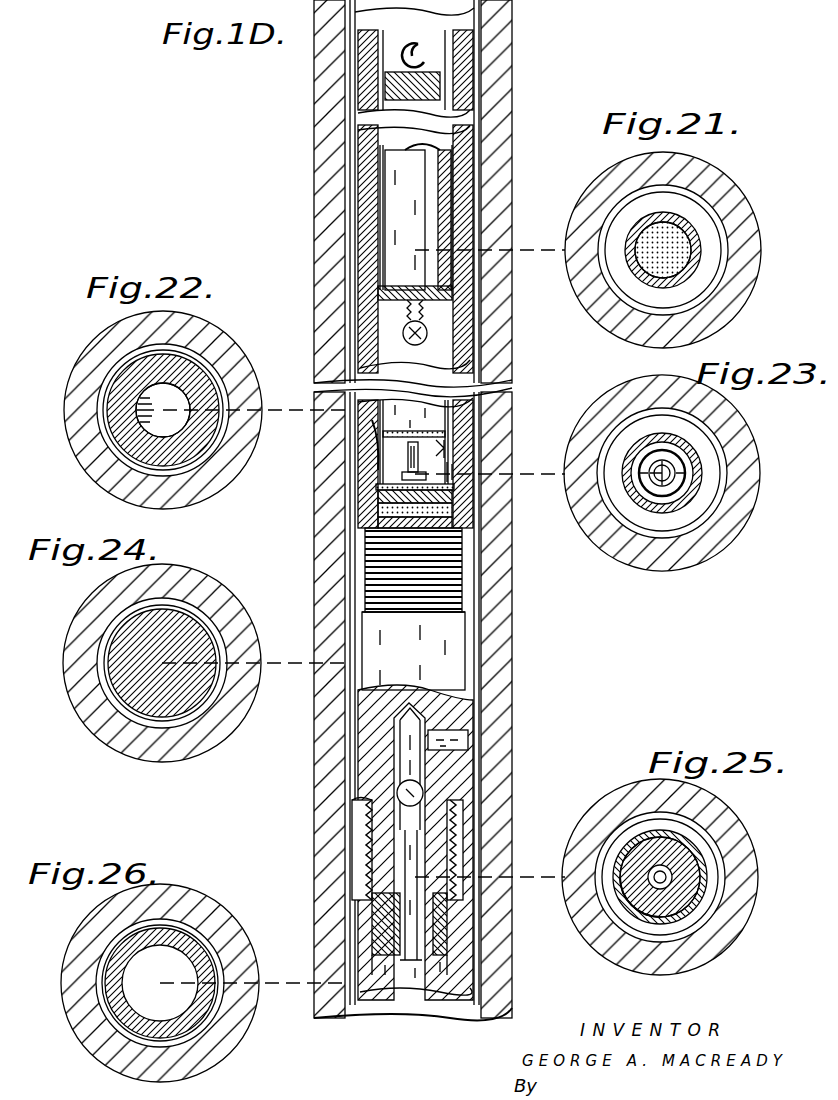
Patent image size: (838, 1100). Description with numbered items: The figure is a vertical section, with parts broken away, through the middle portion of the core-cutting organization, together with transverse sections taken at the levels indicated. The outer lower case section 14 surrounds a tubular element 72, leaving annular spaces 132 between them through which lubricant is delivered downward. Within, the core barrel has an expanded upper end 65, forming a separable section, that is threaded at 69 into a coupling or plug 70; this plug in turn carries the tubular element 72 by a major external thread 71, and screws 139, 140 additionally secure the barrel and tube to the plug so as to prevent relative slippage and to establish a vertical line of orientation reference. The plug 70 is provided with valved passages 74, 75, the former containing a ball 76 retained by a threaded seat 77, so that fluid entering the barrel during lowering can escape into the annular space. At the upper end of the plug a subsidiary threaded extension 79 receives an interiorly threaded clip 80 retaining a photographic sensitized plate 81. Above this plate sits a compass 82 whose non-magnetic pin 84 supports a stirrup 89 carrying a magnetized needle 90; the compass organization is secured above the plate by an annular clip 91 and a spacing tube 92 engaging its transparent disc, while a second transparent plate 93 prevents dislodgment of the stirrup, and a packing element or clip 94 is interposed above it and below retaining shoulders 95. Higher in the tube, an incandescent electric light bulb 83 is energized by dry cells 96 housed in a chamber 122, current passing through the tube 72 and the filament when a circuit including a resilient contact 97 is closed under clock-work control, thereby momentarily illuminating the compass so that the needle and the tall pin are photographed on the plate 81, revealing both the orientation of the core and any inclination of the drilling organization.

In FIG. 1D, the lower case section 14 is at (494, 602).
In FIG. 21, the lower case section 14 is at (718, 190).
In FIG. 23, the lower case section 14 is at (738, 432).
In FIG. 25, the lower case section 14 is at (730, 826).
In FIG. 22, the lower case section 14 is at (224, 347).
In FIG. 24, the lower case section 14 is at (236, 620).
In FIG. 26, the lower case section 14 is at (220, 921).
In FIG. 1D, the expanded upper end of core barrel 65 is at (455, 920).
In FIG. 25, the expanded upper end of core barrel 65 is at (712, 897).
In FIG. 26, the expanded upper end of core barrel 65 is at (202, 1006).
In FIG. 1D, the threaded connection 69 is at (456, 832).
In FIG. 1D, the coupling or plug 70 is at (446, 662).
In FIG. 25, the coupling or plug 70 is at (682, 905).
In FIG. 24, the coupling or plug 70 is at (186, 683).
In FIG. 1D, the major external thread 71 is at (456, 556).
In FIG. 1D, the tubular element 72 is at (455, 214).
In FIG. 21, the tubular element 72 is at (704, 234).
In FIG. 23, the tubular element 72 is at (716, 470).
In FIG. 22, the tubular element 72 is at (122, 426).
In FIG. 1D, the valved passage 74 is at (405, 766).
In FIG. 1D, the valved passage 75 is at (446, 732).
In FIG. 1D, the ball 76 is at (418, 792).
In FIG. 1D, the threaded seat 77 is at (422, 962).
In FIG. 25, the threaded seat 77 is at (630, 918).
In FIG. 1D, the subsidiary threaded extension 79 is at (420, 508).
In FIG. 1D, the interiorly threaded clip 80 is at (420, 521).
In FIG. 1D, the photographic sensitized plate 81 is at (444, 508).
In FIG. 1D, the compass 82 is at (440, 446).
In FIG. 23, the compass 82 is at (676, 488).
In FIG. 1D, the incandescent electric light bulb 83 is at (426, 330).
In FIG. 1D, the pin 84 is at (398, 486).
In FIG. 1D, the stirrup 89 is at (409, 448).
In FIG. 23, the magnetized needle 90 is at (666, 486).
In FIG. 1D, the annular clip 91 is at (452, 466).
In FIG. 1D, the spacing tube 92 is at (403, 474).
In FIG. 23, the spacing tube 92 is at (690, 482).
In FIG. 1D, the second transparent plate 93 is at (470, 398).
In FIG. 22, the second transparent plate 93 is at (176, 402).
In FIG. 1D, the packing element or clip 94 is at (378, 430).
In FIG. 1D, the retaining shoulders 95 is at (456, 426).
In FIG. 1D, the dry cell 96 is at (420, 186).
In FIG. 21, the dry cell 96 is at (682, 258).
In FIG. 1D, the resilient contact 97 is at (422, 60).
In FIG. 1D, the chamber 122 is at (446, 100).
In FIG. 25, the annular spaces 132 is at (720, 870).
In FIG. 22, the annular spaces 132 is at (100, 388).
In FIG. 24, the annular spaces 132 is at (100, 660).
In FIG. 26, the annular spaces 132 is at (212, 956).
In FIG. 1D, the screw 139 is at (362, 806).
In FIG. 1D, the screw 140 is at (368, 616).